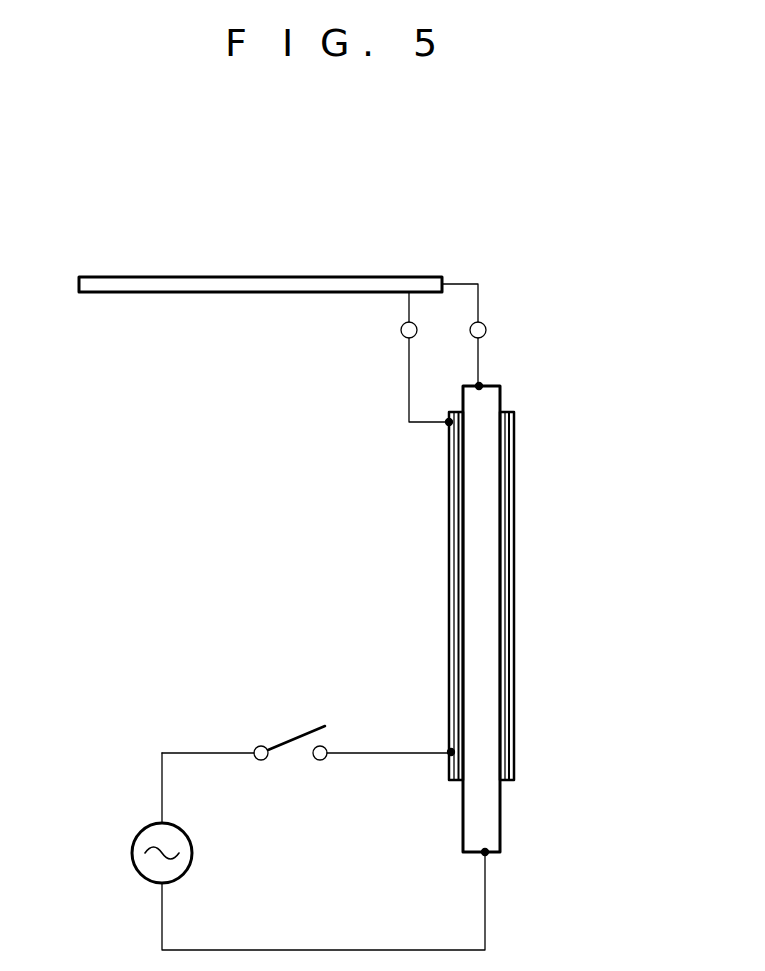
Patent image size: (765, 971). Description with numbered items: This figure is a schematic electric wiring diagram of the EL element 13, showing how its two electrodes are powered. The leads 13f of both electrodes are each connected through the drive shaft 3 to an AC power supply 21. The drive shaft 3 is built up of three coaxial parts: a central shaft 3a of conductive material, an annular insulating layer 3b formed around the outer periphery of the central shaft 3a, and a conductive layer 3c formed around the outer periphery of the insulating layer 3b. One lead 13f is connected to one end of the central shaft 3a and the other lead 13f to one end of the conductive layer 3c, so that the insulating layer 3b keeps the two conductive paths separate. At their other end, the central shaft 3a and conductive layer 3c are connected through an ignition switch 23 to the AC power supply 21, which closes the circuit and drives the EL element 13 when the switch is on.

The EL element 13 is at (252, 277).
The leads 13f is at (409, 304).
The drive shaft 3 is at (546, 603).
The central shaft 3a is at (485, 396).
The annular insulating layer 3b is at (531, 562).
The conductive layer 3c is at (514, 663).
The ignition switch 23 is at (288, 728).
The AC power supply 21 is at (132, 845).